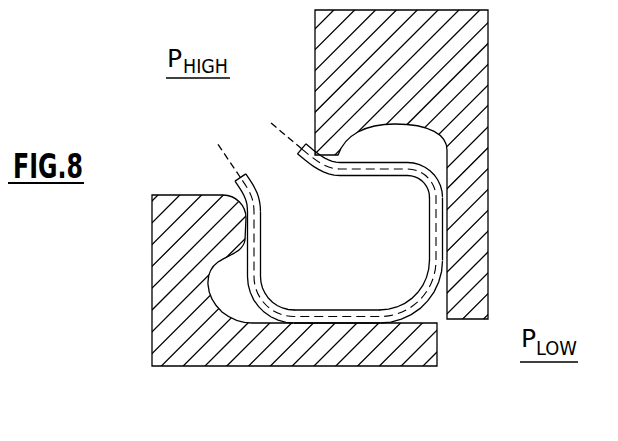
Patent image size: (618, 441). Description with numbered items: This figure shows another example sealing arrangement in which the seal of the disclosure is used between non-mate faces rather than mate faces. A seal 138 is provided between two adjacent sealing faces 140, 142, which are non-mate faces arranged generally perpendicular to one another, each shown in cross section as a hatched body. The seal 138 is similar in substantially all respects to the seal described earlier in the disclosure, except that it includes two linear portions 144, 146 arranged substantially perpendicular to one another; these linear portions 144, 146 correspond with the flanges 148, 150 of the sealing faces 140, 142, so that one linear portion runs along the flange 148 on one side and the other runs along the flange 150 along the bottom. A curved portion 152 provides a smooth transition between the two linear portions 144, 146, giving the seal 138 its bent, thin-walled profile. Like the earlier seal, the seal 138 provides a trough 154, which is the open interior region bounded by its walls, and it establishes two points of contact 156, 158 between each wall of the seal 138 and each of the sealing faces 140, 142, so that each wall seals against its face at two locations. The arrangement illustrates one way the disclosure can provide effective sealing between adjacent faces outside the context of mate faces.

The seal 138 is at (314, 177).
The sealing face 140 is at (316, 128).
The sealing face 142 is at (309, 203).
The linear portion 144 is at (428, 233).
The linear portion 146 is at (338, 310).
The flange 148 is at (466, 242).
The flange 150 is at (360, 340).
The curved portion 152 is at (422, 295).
The trough 154 is at (357, 254).
The point of contact 156 is at (337, 152).
The point of contact 158 is at (448, 221).